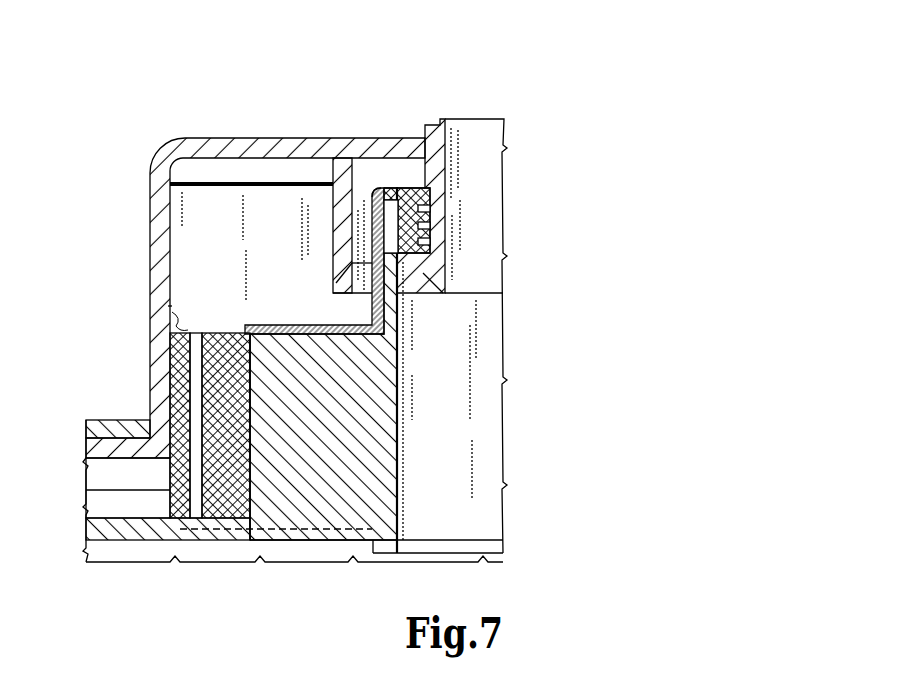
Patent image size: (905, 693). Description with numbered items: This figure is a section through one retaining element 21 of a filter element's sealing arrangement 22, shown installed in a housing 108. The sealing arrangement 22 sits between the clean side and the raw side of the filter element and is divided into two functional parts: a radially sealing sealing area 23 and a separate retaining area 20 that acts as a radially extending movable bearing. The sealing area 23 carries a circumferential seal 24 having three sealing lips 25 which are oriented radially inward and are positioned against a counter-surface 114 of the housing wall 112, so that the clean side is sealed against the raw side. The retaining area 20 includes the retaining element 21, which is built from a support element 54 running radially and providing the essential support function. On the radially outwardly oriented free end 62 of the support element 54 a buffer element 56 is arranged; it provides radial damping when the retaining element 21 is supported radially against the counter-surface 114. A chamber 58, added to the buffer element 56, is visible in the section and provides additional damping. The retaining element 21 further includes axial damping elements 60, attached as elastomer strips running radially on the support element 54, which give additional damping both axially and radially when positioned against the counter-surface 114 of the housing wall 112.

The housing 108 is at (140, 183).
The housing wall 112 is at (437, 128).
The retaining area 20 is at (237, 278).
The retaining element 21 is at (213, 327).
The counter-surface 114 is at (168, 306).
The axial damping element 60 is at (303, 324).
The seal 24 is at (382, 175).
The sealing area 23 is at (395, 163).
The sealing lip 25 is at (437, 188).
The sealing arrangement 22 is at (417, 365).
The support element 54 is at (322, 510).
The buffer element 56 is at (218, 513).
The chamber 58 is at (196, 516).
The free end 62 is at (250, 516).